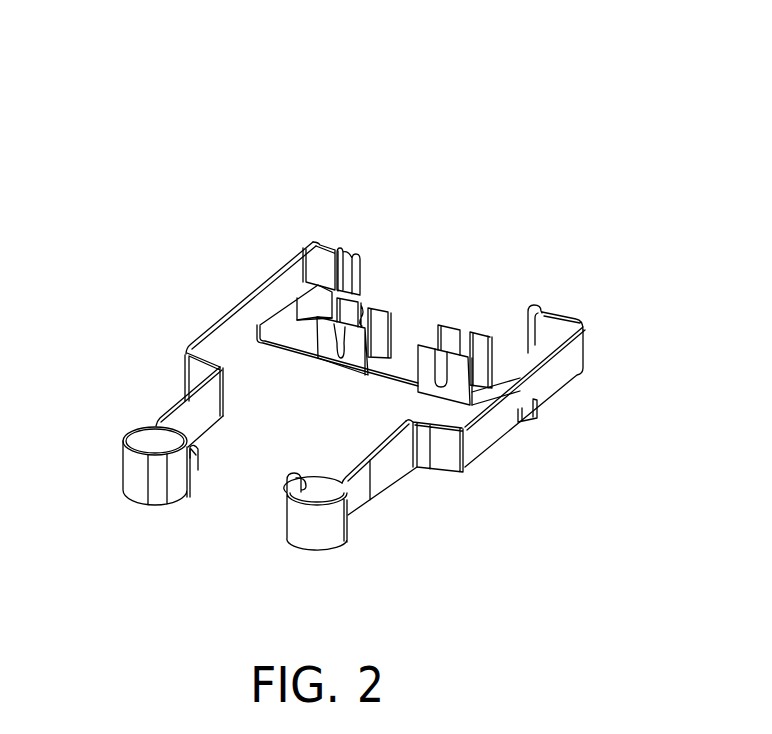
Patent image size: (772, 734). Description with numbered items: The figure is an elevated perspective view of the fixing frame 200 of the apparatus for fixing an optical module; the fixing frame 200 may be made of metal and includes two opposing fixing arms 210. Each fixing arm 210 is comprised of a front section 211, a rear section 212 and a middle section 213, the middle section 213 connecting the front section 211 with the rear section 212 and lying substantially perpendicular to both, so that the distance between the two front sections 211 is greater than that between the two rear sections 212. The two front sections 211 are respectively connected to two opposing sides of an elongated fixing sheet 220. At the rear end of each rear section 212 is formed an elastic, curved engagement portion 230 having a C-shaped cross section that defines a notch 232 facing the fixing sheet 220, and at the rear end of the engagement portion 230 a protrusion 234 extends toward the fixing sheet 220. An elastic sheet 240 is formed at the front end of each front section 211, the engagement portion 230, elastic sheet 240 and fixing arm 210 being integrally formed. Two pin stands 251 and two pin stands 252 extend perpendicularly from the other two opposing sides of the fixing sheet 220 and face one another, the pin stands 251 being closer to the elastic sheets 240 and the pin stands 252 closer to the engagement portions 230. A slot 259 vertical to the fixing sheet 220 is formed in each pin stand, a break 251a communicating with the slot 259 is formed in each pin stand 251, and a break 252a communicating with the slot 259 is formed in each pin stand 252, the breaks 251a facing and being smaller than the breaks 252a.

The fixing frame 200 is at (279, 83).
The fixing arm 210 is at (205, 318).
The front section 211 is at (253, 308).
The rear section 212 is at (175, 405).
The middle section 213 is at (195, 375).
The fixing sheet 220 is at (393, 370).
The engagement portion 230 is at (140, 487).
The notch 232 is at (142, 443).
The protrusion 234 is at (195, 462).
The elastic sheet 240 is at (340, 267).
The pin stand 251 is at (375, 302).
The break 251a is at (462, 320).
The pin stand 252 is at (430, 373).
The break 252a is at (324, 330).
The slot 259 is at (362, 313).